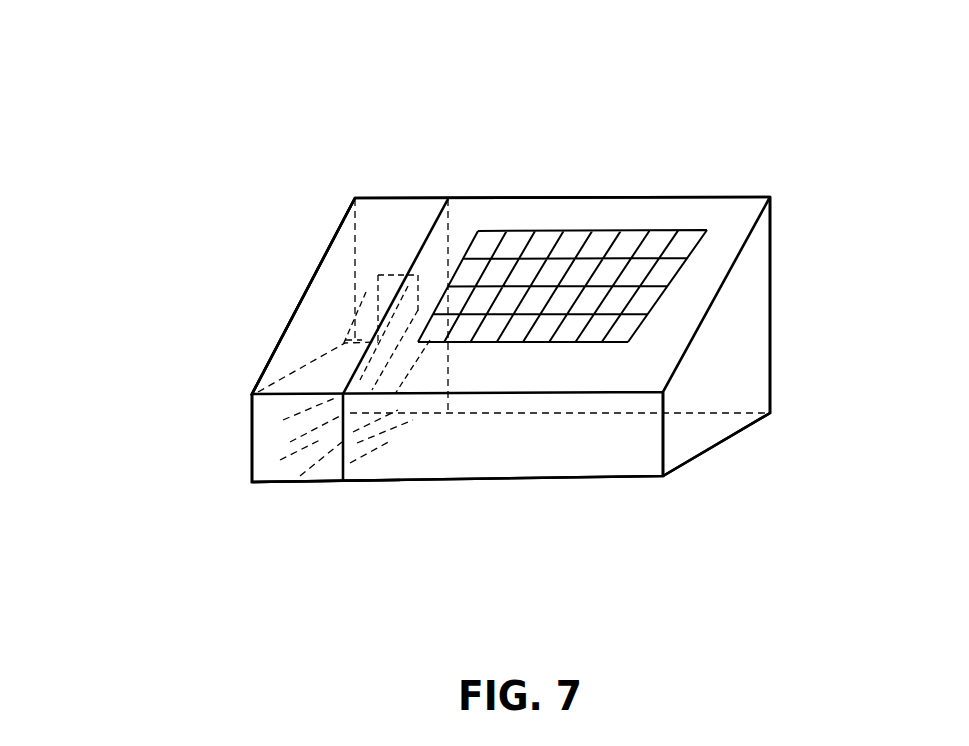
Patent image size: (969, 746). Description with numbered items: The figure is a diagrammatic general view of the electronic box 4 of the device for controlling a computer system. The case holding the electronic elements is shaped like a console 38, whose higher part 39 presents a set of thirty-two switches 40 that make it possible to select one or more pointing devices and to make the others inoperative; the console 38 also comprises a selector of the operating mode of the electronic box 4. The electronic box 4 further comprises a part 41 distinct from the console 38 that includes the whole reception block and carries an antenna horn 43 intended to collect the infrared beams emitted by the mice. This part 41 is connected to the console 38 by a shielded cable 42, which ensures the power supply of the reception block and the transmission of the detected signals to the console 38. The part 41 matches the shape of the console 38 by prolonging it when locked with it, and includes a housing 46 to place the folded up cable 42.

The electronic box 4 is at (711, 182).
The console 38 is at (725, 341).
The higher part 39 is at (601, 203).
The switches 40 is at (493, 328).
The distinct part 41 is at (274, 311).
The shielded cable 42 is at (320, 477).
The antenna horn 43 is at (378, 277).
The housing 46 is at (252, 482).